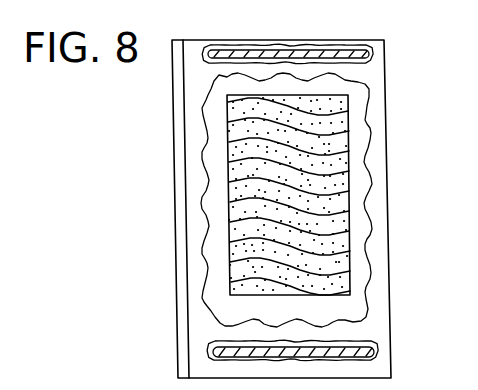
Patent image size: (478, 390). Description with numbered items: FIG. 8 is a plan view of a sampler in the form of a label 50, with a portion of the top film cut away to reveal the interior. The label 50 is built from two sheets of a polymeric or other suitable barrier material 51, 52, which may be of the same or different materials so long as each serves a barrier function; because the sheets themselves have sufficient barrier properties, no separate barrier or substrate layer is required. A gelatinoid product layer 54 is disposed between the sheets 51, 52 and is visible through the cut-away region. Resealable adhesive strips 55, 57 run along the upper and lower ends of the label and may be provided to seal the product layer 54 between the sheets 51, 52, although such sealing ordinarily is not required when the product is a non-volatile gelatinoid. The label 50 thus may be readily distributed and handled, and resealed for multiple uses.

The label 50 is at (398, 121).
The sheet of barrier material 51 is at (192, 55).
The sheet of barrier material 52 is at (183, 142).
The gelatinoid product layer 54 is at (348, 182).
The resealable adhesive strip 55 is at (330, 54).
The resealable adhesive strip 57 is at (337, 355).